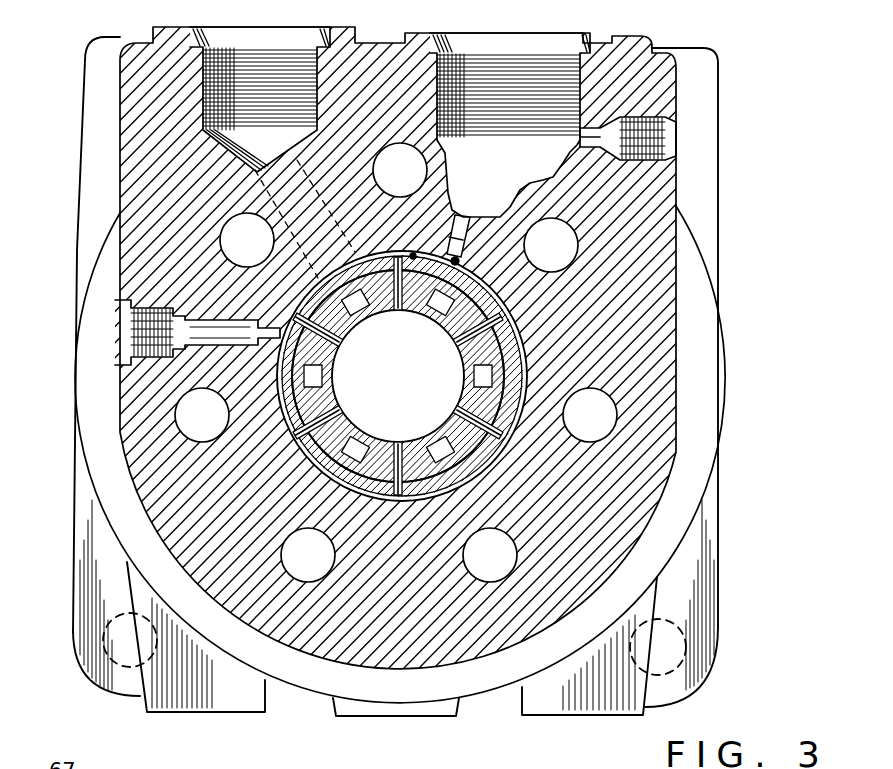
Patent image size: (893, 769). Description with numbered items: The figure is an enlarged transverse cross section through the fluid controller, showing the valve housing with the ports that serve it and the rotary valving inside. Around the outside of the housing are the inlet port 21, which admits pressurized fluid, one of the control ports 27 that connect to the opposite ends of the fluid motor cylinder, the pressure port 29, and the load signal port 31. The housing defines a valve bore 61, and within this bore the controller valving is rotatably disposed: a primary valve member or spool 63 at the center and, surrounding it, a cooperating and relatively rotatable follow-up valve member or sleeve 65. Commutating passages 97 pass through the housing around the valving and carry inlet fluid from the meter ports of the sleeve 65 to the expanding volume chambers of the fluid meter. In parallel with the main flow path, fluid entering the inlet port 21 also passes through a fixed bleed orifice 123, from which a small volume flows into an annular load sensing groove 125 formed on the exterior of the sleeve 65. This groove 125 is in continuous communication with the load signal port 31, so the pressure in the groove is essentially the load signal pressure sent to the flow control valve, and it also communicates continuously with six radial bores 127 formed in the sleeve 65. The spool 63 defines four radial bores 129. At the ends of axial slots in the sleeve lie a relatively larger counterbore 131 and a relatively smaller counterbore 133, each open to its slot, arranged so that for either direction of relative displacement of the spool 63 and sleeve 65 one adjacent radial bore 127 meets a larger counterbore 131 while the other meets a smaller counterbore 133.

The inlet port 21 is at (530, 60).
The control port 27 is at (270, 55).
The pressure port 29 is at (640, 145).
The load signal port 31 is at (158, 344).
The valve bore 61 is at (494, 291).
The primary valve member (spool) 63 is at (318, 353).
The follow-up valve member (sleeve) 65 is at (490, 353).
The commutating passages 97 is at (548, 221).
The fixed bleed orifice 123 is at (462, 263).
The load sensing groove 125 is at (414, 250).
The radial bores 127 is at (300, 316).
The radial bores 129 is at (397, 300).
The larger counterbore 131 is at (485, 343).
The smaller counterbore 133 is at (308, 410).